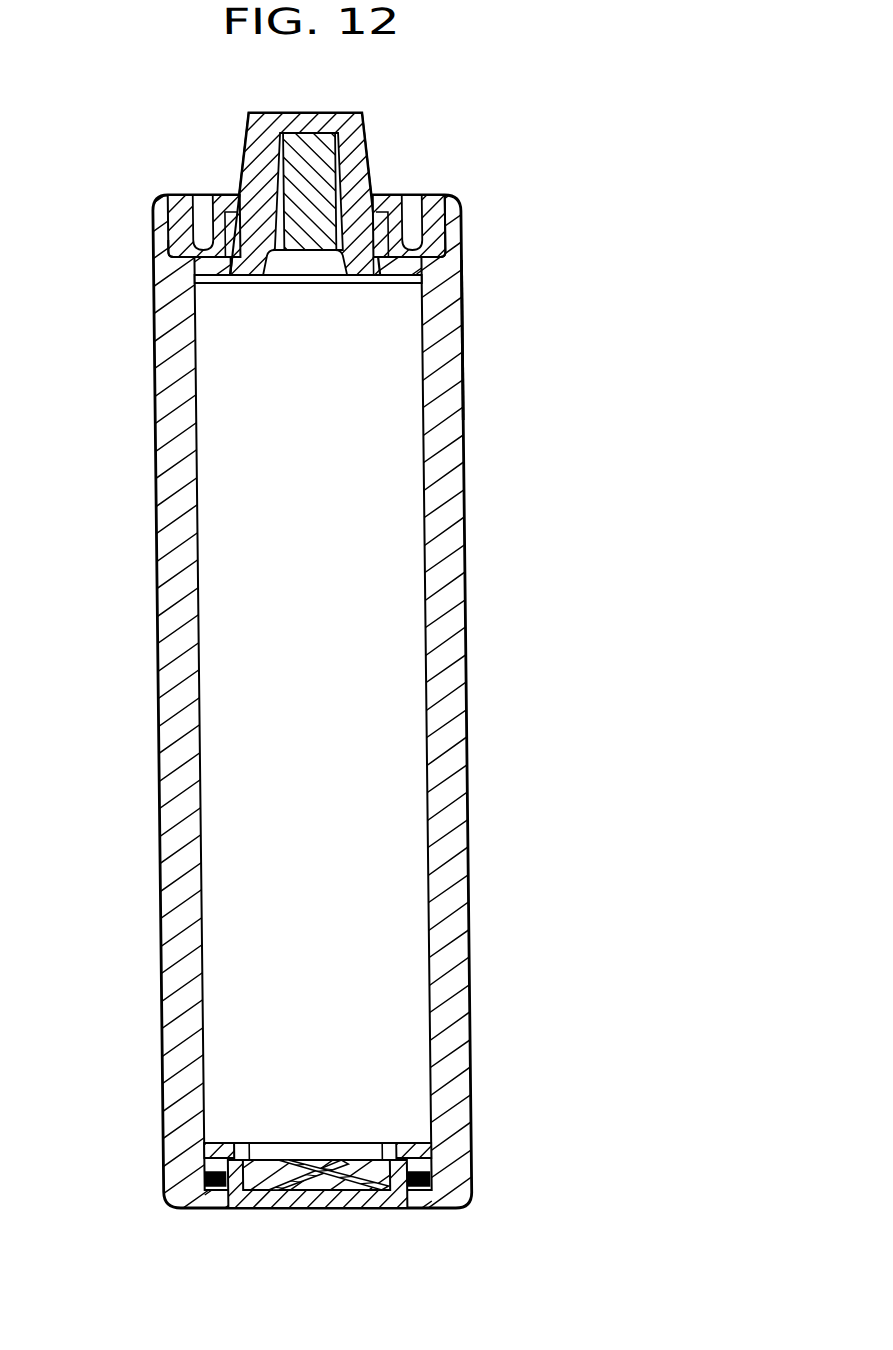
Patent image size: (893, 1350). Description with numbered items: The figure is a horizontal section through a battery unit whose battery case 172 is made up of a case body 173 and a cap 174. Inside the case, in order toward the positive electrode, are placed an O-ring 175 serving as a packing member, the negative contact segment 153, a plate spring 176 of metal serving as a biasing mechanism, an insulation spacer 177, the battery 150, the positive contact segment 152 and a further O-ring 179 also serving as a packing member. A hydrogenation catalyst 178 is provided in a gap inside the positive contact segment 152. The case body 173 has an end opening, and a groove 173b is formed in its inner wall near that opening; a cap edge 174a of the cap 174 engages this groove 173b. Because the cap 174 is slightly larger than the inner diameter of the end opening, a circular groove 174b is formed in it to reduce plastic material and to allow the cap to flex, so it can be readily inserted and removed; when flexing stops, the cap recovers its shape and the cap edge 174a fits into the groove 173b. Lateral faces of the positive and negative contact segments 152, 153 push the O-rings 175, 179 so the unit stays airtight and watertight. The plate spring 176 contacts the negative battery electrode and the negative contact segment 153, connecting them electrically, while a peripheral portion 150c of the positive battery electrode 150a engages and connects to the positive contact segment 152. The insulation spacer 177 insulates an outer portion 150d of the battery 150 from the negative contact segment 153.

The battery 150 is at (402, 673).
The positive battery electrode 150a is at (311, 265).
The peripheral portion 150c is at (256, 278).
The outer portion 150d is at (400, 1142).
The positive contact segment 152 is at (249, 159).
The negative contact segment 153 is at (264, 1208).
The battery case 172 is at (607, 185).
The case body 173 is at (464, 345).
The groove 173b is at (391, 277).
The cap 174 is at (464, 210).
The cap edge 174a is at (171, 249).
The circular groove 174b is at (209, 205).
The O-ring 175 is at (209, 1208).
The plate spring 176 is at (323, 1208).
The insulation spacer 177 is at (415, 1152).
The hydrogenation catalyst 178 is at (337, 150).
The O-ring 179 is at (225, 276).